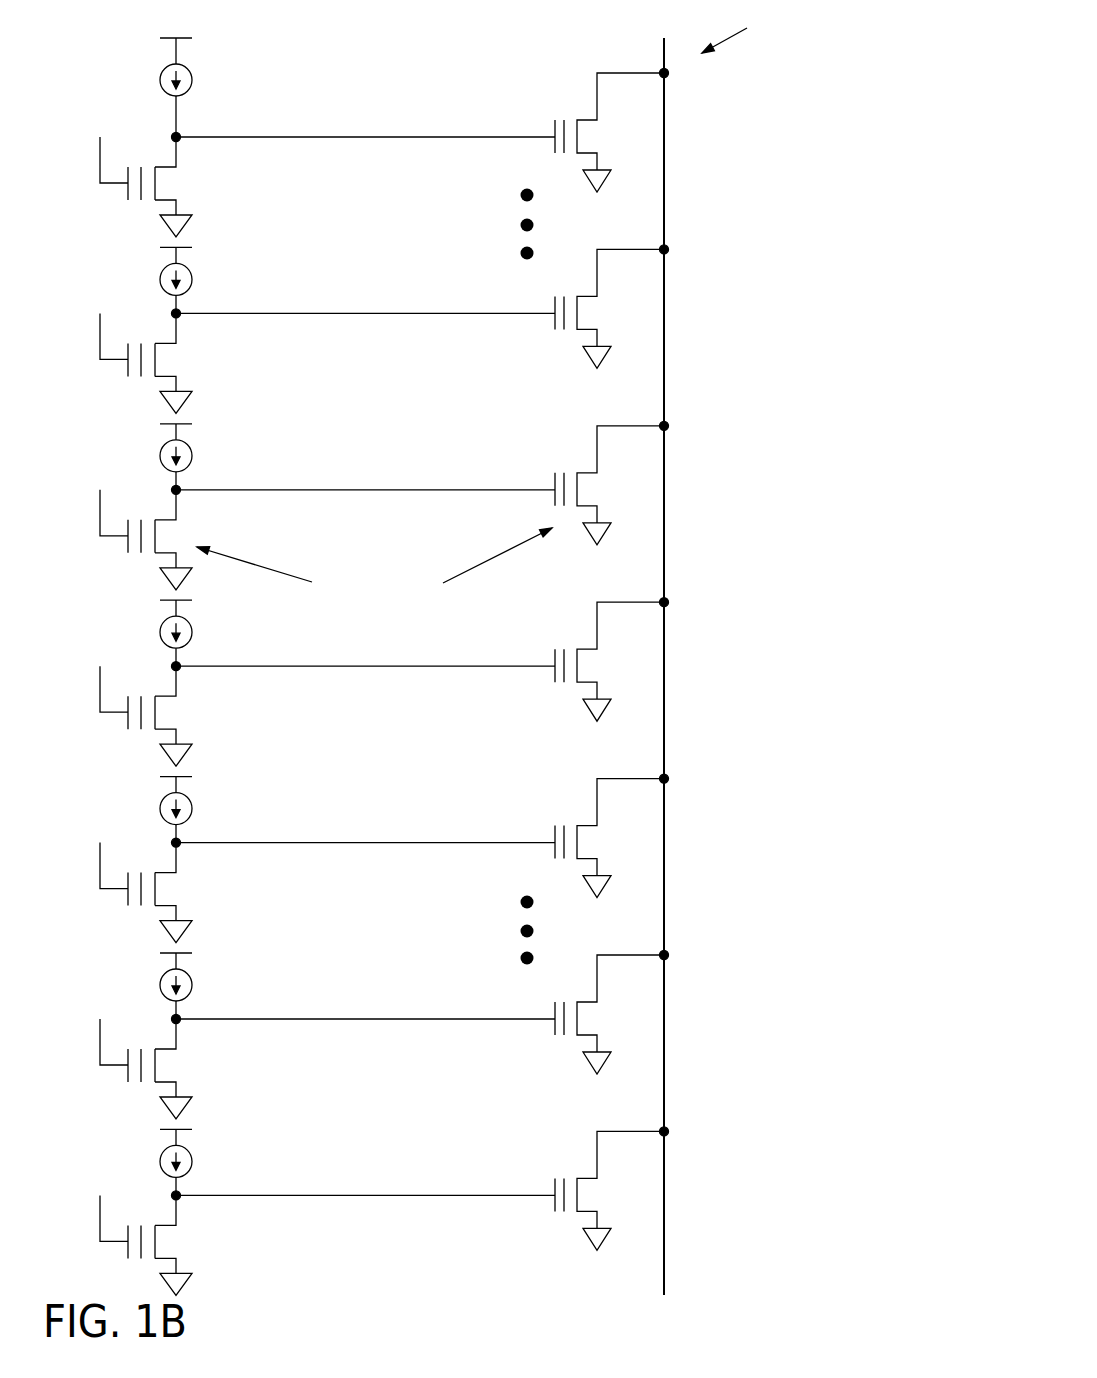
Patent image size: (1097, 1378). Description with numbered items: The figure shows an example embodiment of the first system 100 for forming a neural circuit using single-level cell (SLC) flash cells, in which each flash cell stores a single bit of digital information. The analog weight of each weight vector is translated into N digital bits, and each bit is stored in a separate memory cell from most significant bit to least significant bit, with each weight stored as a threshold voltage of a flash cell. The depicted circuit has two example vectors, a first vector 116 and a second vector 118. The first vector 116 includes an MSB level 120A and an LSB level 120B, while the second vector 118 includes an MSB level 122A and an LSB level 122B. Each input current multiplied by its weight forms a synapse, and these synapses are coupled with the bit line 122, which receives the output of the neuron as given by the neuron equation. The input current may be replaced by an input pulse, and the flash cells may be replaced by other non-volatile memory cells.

The first system 100 is at (524, 656).
The first vector 116 is at (745, 299).
The second vector 118 is at (751, 942).
The MSB level 120A is at (643, 173).
The LSB level 120B is at (643, 500).
The bit line 122 is at (667, 1233).
The MSB level 122A is at (642, 667).
The LSB level 122B is at (642, 1162).